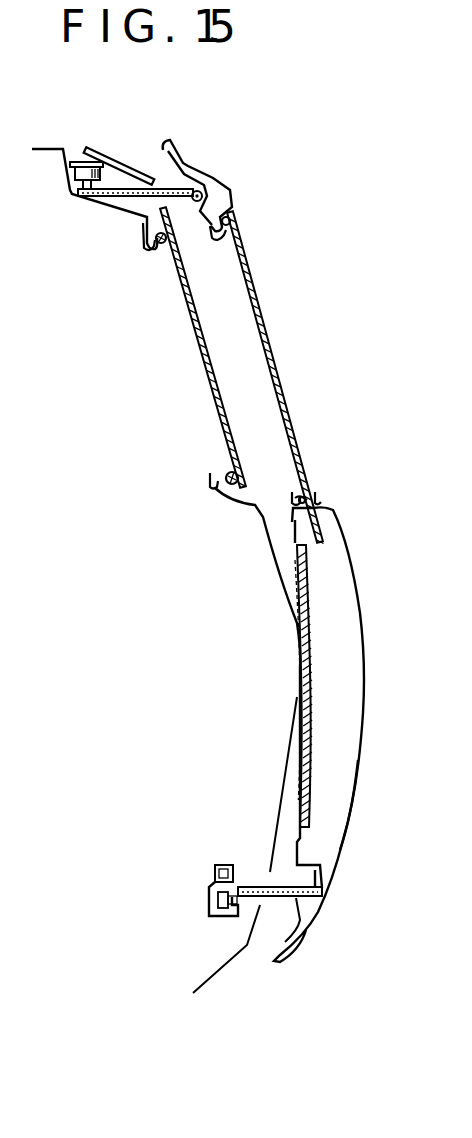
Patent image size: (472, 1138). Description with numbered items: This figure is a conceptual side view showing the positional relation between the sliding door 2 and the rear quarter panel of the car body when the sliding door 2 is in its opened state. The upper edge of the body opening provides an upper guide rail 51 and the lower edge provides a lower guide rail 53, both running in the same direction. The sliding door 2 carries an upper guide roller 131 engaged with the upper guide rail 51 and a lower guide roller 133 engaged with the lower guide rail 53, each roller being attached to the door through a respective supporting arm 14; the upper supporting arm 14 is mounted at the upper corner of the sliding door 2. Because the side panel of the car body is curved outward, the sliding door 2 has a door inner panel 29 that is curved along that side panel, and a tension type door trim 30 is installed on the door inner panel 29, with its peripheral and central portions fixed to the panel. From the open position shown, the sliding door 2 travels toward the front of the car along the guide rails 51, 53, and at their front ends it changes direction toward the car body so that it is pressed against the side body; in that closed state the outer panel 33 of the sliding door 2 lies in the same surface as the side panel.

The sliding door 2 is at (375, 722).
The supporting arm 14 is at (127, 197).
The door inner panel 29 is at (297, 847).
The door trim 30 is at (308, 677).
The outer panel 33 is at (350, 823).
The upper guide rail 51 is at (80, 160).
The upper guide roller 131 is at (74, 190).
The lower guide rail 53 is at (213, 873).
The lower guide roller 133 is at (204, 907).